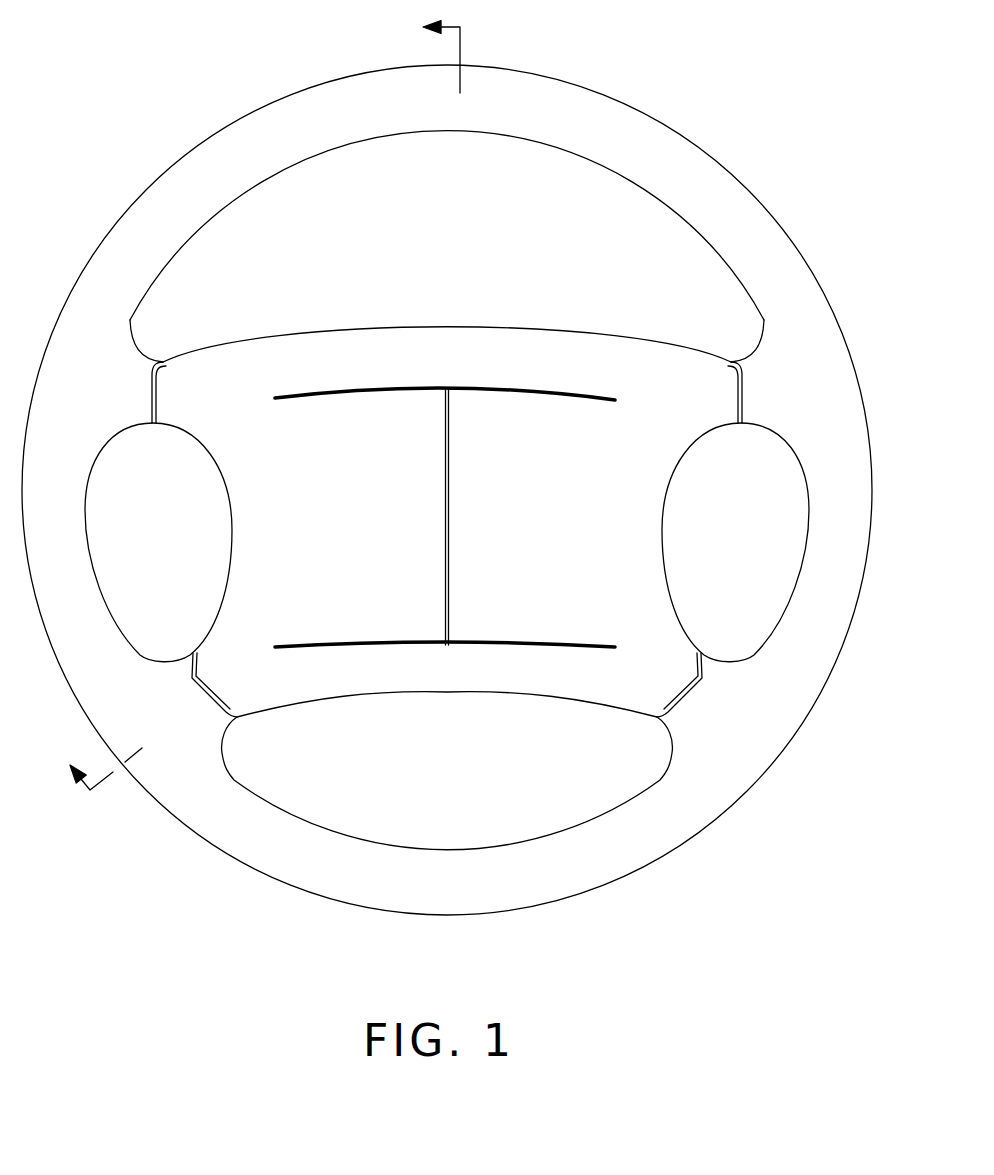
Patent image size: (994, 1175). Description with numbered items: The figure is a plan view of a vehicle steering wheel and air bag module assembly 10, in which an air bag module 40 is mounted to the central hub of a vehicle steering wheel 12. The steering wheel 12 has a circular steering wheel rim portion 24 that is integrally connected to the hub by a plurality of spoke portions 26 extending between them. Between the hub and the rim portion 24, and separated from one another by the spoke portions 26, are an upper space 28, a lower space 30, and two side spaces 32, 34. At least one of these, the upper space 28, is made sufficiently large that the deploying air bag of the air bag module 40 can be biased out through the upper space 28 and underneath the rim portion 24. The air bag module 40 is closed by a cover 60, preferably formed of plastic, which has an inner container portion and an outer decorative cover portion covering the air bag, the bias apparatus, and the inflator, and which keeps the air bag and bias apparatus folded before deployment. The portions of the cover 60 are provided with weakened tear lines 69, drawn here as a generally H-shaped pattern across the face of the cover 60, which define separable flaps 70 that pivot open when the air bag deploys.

The vehicle steering wheel and air bag module assembly 10 is at (163, 132).
The vehicle steering wheel 12 is at (640, 97).
The steering wheel rim portion 24 is at (100, 263).
The spoke portions 26 is at (135, 368).
The upper space 28 is at (458, 221).
The lower space 30 is at (467, 801).
The side space 32 is at (167, 541).
The side space 34 is at (746, 541).
The air bag module 40 is at (347, 318).
The cover 60 is at (488, 348).
The weakened tear lines 69 is at (562, 400).
The separable flaps 70 is at (370, 630).